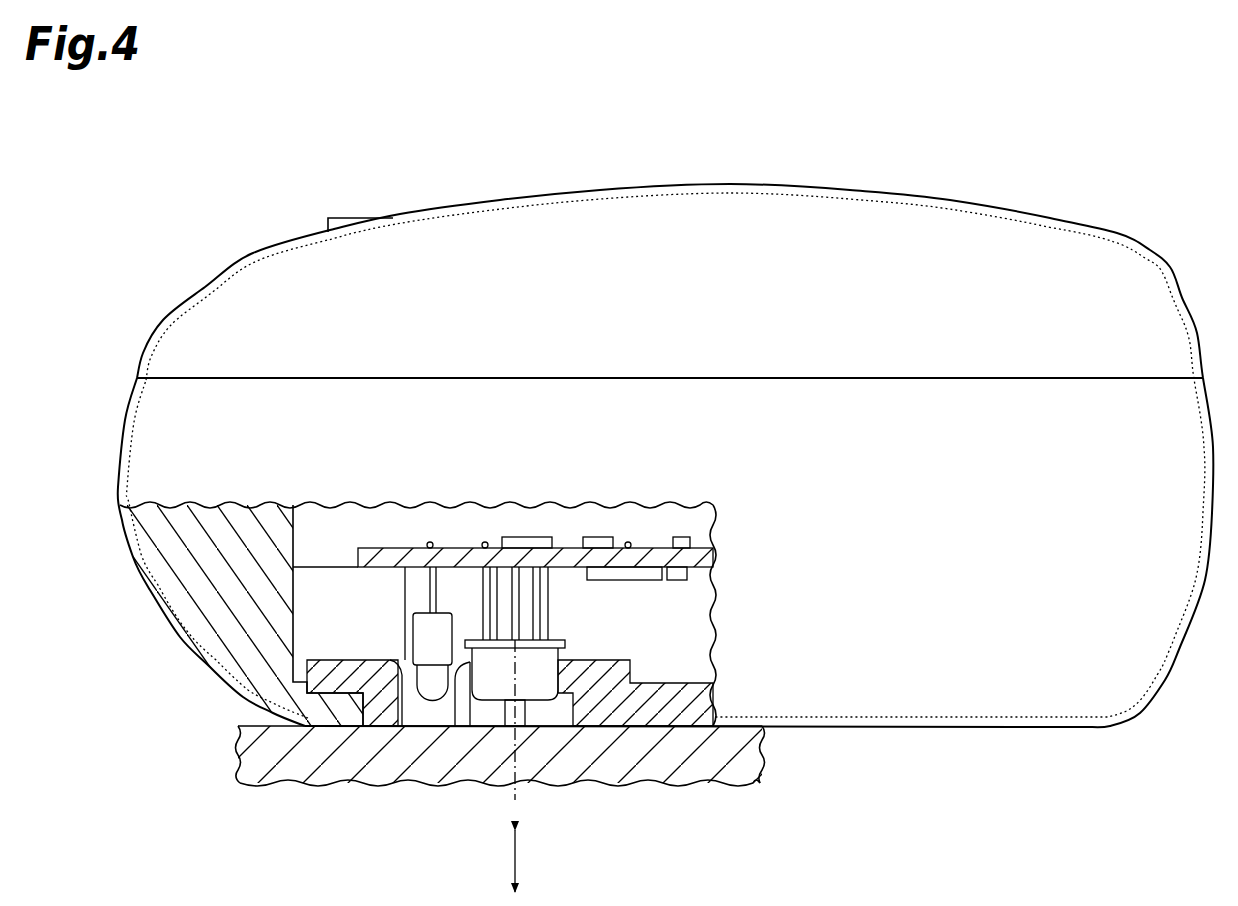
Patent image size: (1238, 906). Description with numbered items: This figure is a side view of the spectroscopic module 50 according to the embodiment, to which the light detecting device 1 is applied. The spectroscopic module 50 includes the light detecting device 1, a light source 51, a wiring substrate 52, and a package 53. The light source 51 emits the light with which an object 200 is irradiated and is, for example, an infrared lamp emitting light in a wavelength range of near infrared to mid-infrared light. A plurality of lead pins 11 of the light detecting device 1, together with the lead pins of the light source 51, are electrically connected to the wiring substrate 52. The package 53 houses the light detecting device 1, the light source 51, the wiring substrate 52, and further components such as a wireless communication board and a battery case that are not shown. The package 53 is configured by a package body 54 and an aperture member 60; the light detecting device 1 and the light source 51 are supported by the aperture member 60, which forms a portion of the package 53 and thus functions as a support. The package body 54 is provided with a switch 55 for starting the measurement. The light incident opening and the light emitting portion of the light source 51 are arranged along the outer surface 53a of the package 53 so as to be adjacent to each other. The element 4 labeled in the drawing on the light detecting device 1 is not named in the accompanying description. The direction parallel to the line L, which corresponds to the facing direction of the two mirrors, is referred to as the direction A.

The spectroscopic module 50 is at (1010, 160).
The package 53 is at (732, 178).
The outer surface of the package 53a is at (857, 728).
The package body 54 is at (207, 632).
The switch 55 is at (350, 218).
The wiring substrate 52 is at (655, 562).
The lead pins 11 is at (497, 612).
The light source 51 is at (432, 704).
The ultrasonic transducer 4 is at (540, 668).
The light detecting device 1 is at (534, 746).
The aperture member 60 is at (557, 713).
The object 200 is at (243, 765).
The line L is at (510, 760).
The direction A is at (520, 855).